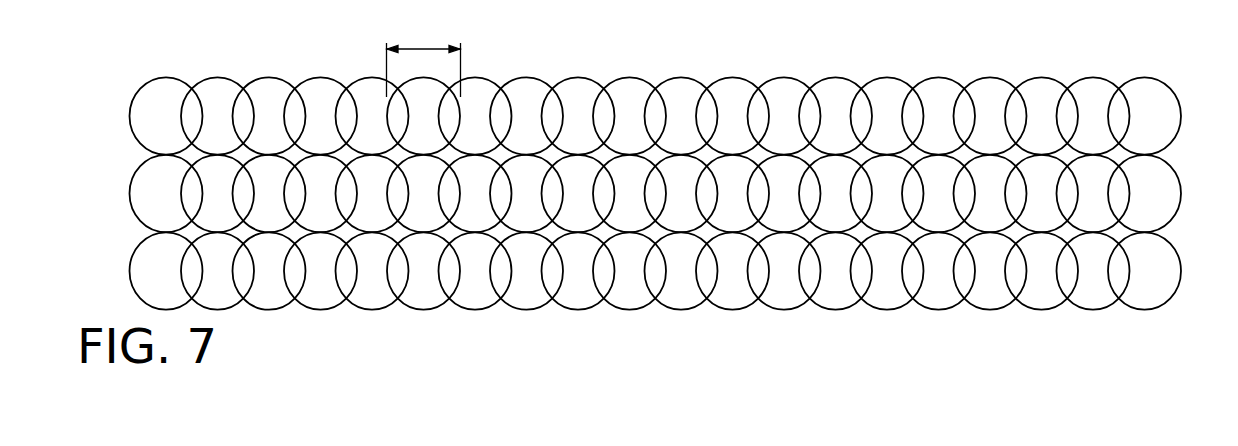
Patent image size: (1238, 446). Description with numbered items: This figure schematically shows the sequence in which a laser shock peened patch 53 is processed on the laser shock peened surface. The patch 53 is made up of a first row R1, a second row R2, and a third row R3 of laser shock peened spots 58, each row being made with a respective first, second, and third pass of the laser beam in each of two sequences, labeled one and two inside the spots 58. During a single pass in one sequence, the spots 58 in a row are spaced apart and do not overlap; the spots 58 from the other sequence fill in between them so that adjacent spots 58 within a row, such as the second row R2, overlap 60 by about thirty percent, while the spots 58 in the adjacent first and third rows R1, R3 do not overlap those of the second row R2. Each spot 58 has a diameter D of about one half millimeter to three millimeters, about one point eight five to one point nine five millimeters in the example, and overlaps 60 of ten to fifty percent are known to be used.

The first row R1 is at (158, 112).
The second row R2 is at (143, 188).
The third row R3 is at (143, 266).
The diameter D is at (424, 44).
The overlap 60 is at (757, 106).
The laser shock peened patch 53 is at (952, 62).
The laser shock peened spots 58 is at (1157, 78).